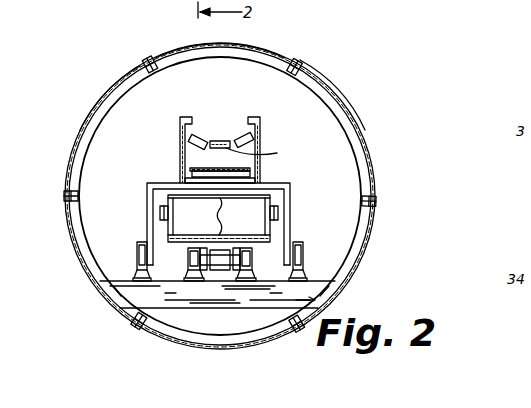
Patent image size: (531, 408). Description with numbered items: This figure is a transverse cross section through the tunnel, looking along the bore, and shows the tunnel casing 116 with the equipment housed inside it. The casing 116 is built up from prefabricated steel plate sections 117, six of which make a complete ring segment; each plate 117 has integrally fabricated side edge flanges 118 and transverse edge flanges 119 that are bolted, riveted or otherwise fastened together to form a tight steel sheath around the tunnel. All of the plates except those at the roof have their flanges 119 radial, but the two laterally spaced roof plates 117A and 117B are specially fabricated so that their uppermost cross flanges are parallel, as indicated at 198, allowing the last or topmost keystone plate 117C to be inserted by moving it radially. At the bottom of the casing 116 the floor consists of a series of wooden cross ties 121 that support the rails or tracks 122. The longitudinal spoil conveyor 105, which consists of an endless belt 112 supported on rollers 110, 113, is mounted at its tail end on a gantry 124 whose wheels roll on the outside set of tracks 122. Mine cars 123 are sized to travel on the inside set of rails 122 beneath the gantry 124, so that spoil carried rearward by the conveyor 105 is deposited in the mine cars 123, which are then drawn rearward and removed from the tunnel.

The spoil conveyor 105 is at (261, 133).
The roller 110 is at (250, 172).
The endless belt 112 is at (219, 140).
The roller 113 is at (266, 153).
The tunnel casing 116 is at (80, 123).
The steel plate section 117 is at (368, 238).
The roof plate 117A is at (335, 94).
The roof plate 117B is at (127, 77).
The keystone plate 117C is at (178, 50).
The side edge flange 118 is at (80, 150).
The transverse edge flange 119 is at (73, 194).
The wooden cross tie 121 is at (132, 301).
The rails or tracks 122 is at (187, 276).
The mine car 123 is at (262, 238).
The gantry 124 is at (286, 202).
The parallel cross flanges 198 is at (148, 61).